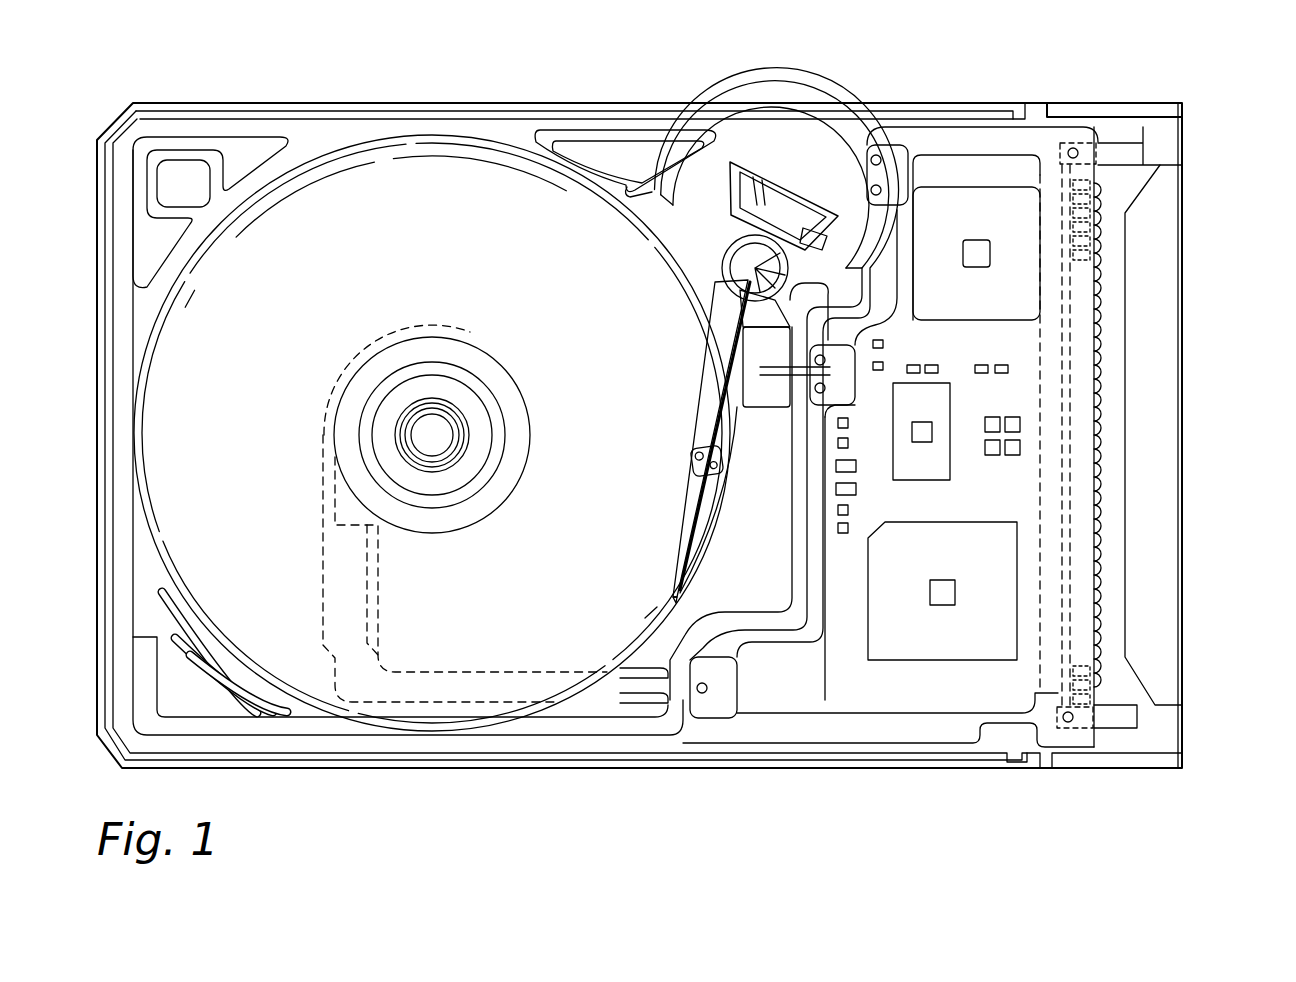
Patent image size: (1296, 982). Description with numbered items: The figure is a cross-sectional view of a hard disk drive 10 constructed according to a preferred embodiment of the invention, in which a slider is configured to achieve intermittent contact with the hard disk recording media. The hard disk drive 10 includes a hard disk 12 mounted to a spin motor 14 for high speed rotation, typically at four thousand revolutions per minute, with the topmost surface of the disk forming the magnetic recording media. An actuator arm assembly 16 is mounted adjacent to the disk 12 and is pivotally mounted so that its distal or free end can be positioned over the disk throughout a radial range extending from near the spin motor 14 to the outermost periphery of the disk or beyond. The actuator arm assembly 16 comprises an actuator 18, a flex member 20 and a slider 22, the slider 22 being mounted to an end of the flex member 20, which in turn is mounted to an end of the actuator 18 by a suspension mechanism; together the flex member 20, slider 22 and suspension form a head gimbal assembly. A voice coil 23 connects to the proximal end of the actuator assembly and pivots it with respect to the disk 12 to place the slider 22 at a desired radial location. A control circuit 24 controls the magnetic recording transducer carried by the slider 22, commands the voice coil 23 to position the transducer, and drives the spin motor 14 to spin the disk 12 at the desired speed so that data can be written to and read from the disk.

The hard disk drive 10 is at (1207, 94).
The hard disk 12 is at (382, 203).
The spin motor 14 is at (432, 435).
The actuator arm assembly 16 is at (620, 258).
The actuator 18 is at (712, 395).
The flex member 20 is at (692, 500).
The slider 22 is at (670, 598).
The voice coil 23 is at (790, 178).
The control circuit 24 is at (983, 487).